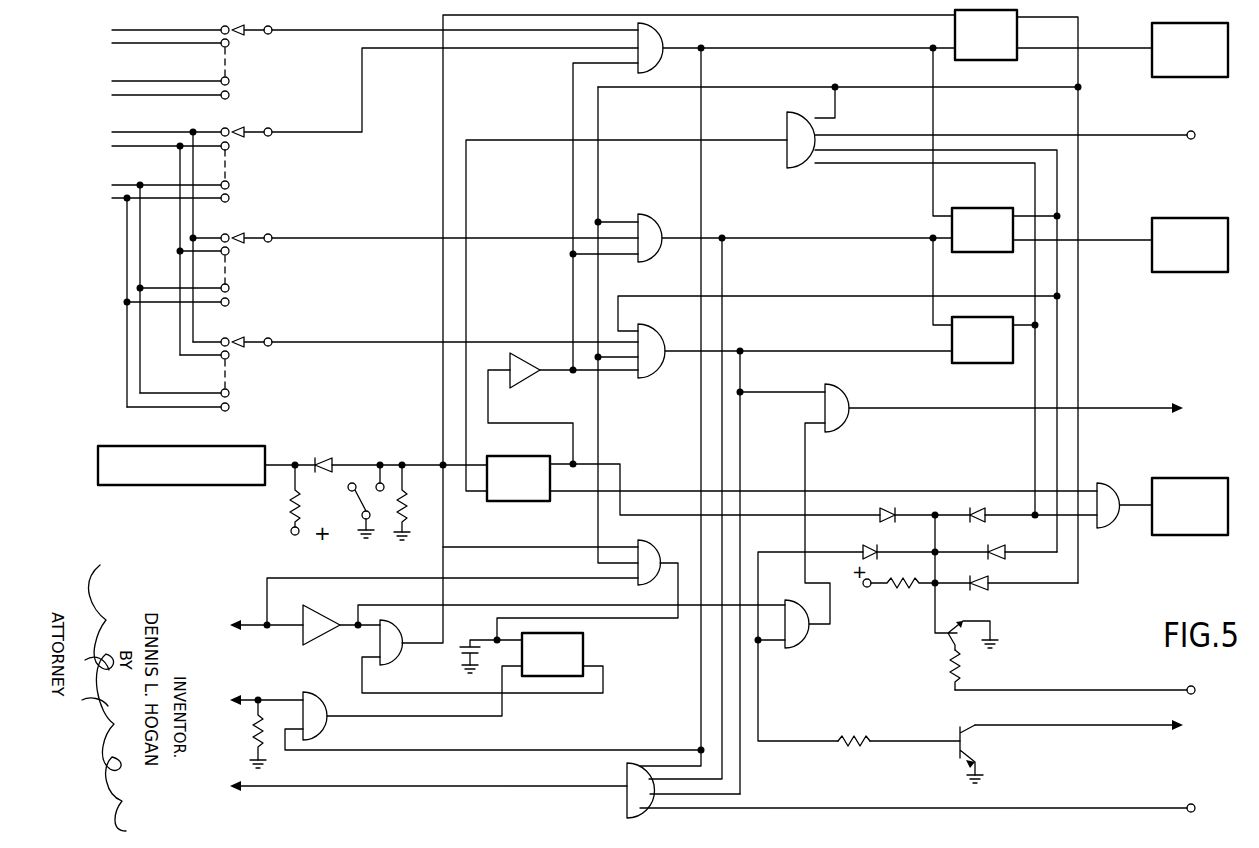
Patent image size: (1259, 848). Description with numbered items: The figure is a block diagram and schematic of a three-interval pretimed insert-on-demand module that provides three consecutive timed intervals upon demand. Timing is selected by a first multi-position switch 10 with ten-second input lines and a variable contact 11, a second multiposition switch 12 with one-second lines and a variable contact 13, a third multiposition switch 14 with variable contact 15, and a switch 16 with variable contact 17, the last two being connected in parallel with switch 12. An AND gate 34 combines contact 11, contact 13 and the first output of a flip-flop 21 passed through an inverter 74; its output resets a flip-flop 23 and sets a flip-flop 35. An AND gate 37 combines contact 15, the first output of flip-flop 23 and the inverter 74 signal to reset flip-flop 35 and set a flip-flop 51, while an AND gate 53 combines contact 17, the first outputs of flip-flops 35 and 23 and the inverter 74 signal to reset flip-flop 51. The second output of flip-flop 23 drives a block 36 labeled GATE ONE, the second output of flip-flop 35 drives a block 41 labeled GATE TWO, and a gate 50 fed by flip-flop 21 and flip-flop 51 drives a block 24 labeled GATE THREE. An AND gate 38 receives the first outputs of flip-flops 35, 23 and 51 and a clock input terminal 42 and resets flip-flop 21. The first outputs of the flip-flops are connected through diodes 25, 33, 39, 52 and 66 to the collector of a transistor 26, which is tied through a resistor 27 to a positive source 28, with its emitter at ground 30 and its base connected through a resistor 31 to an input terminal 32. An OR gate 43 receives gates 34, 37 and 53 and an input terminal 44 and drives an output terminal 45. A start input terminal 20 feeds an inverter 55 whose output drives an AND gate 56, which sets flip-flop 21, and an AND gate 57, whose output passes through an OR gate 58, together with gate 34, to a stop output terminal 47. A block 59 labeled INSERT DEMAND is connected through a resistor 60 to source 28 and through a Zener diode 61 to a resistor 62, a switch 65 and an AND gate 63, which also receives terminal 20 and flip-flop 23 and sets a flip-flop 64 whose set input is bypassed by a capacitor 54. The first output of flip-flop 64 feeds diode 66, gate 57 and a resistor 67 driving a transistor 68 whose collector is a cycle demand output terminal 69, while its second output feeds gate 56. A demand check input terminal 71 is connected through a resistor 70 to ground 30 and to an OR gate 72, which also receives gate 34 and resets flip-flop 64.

The first multi-position switch 10 is at (268, 71).
The variable contact 11 is at (257, 29).
The second multiposition switch 12 is at (268, 175).
The variable contact 13 is at (259, 132).
The third multiposition switch 14 is at (268, 281).
The variable contact 15 is at (259, 237).
The switch 16 is at (268, 385).
The variable contact 17 is at (259, 341).
The input terminal 20 is at (234, 623).
The flip-flop 21 is at (528, 487).
The flip-flop 23 is at (997, 44).
The first load means 24 is at (1178, 477).
The diode 25 is at (886, 512).
The transistor 26 is at (961, 618).
The resistor 27 is at (897, 582).
The source of positive energizing potential 28 is at (291, 529).
The ground 30 is at (401, 537).
The resistor 31 is at (958, 664).
The input terminal 32 is at (1196, 693).
The diode 33 is at (991, 579).
The AND gate 34 is at (661, 40).
The flip-flop 35 is at (995, 239).
The block 36 is at (1175, 23).
The AND gate 37 is at (661, 228).
The AND gate 38 is at (796, 117).
The diode 39 is at (1003, 549).
The block 41 is at (1178, 216).
The input terminal 42 is at (1188, 131).
The OR gate 43 is at (630, 767).
The input terminal 44 is at (1189, 804).
The output terminal 45 is at (248, 788).
The stop output terminal 47 is at (1184, 405).
The gate 50 is at (1122, 489).
The flip-flop 51 is at (993, 348).
The diode 52 is at (970, 514).
The AND gate 53 is at (663, 332).
The capacitor 54 is at (473, 643).
The inverter 55 is at (332, 608).
The AND gate 56 is at (404, 637).
The AND gate 57 is at (809, 636).
The OR gate 58 is at (850, 425).
The block 59 is at (233, 444).
The resistor 60 is at (290, 496).
The Zener diode 61 is at (333, 461).
The resistor 62 is at (400, 503).
The AND gate 63 is at (661, 550).
The flip-flop 64 is at (564, 664).
The switch 65 is at (358, 501).
The diode 66 is at (862, 548).
The resistor 67 is at (853, 734).
The transistor 68 is at (1000, 753).
The cycle demand output terminal 69 is at (1181, 721).
The resistor 70 is at (253, 735).
The demand check input terminal 71 is at (234, 706).
The OR gate 72 is at (324, 704).
The inverter 74 is at (532, 363).